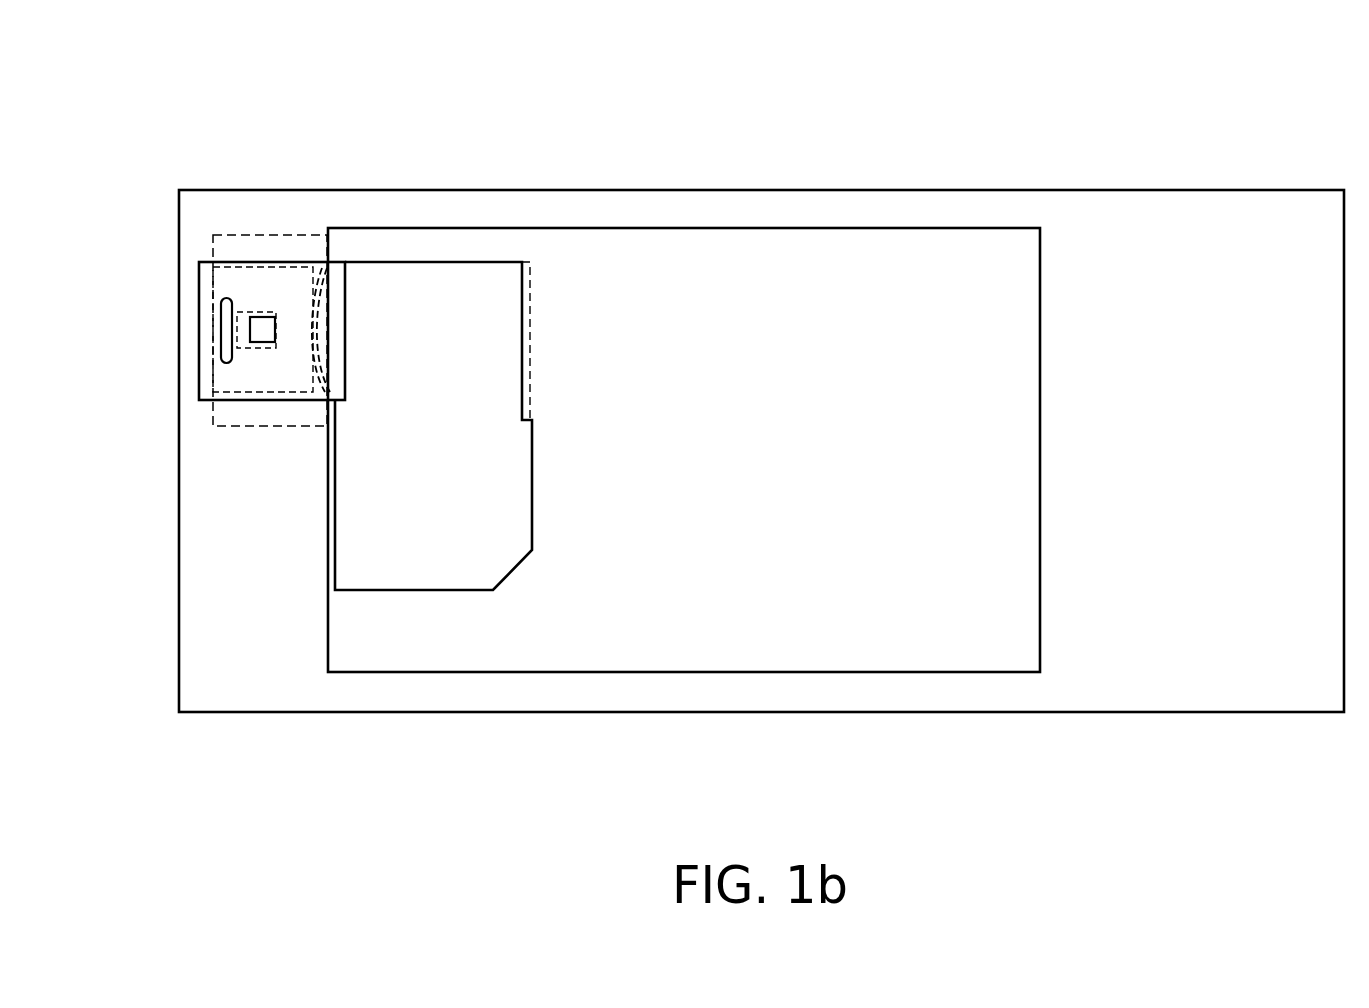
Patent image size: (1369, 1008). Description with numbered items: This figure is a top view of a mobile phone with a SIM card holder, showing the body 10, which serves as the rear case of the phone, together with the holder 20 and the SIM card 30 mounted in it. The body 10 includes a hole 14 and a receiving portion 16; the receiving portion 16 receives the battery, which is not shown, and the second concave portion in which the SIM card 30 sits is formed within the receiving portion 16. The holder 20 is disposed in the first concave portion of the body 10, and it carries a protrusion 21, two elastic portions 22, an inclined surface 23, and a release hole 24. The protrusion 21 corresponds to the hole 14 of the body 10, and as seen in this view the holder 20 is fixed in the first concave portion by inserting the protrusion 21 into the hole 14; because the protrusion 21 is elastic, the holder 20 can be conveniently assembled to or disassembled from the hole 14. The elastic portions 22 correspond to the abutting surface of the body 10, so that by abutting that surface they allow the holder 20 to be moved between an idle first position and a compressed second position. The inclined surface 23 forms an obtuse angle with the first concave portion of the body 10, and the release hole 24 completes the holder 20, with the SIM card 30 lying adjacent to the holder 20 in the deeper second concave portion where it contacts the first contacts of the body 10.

The body 10 is at (1171, 280).
The hole 14 is at (247, 313).
The receiving portion 16 is at (801, 325).
The holder 20 is at (237, 280).
The protrusion 21 is at (265, 323).
The elastic portion 22 is at (317, 285).
The inclined surface 23 is at (335, 277).
The release hole 24 is at (228, 318).
The SIM card 30 is at (452, 325).